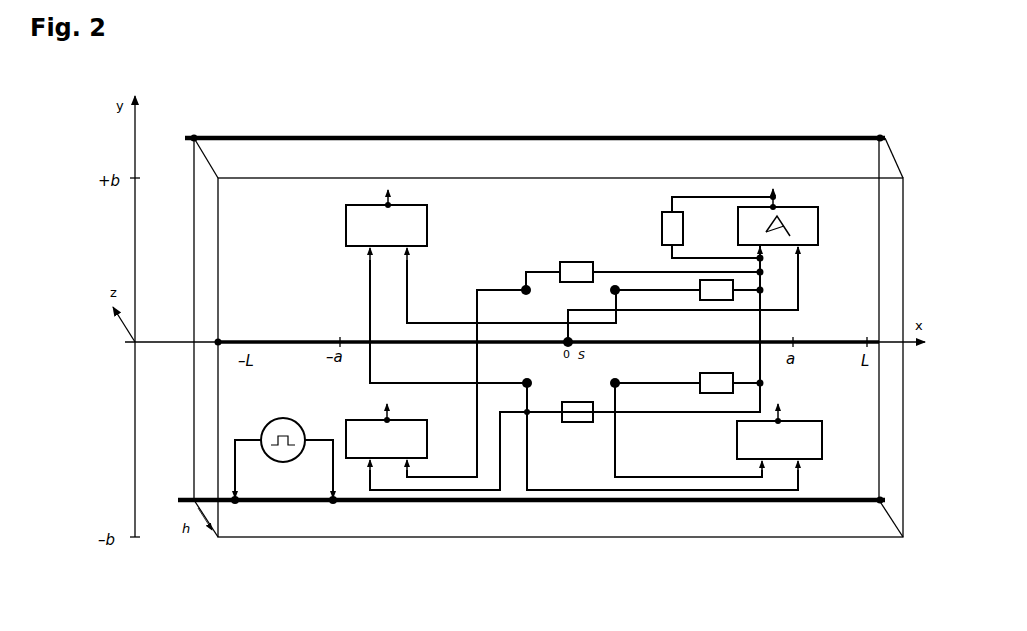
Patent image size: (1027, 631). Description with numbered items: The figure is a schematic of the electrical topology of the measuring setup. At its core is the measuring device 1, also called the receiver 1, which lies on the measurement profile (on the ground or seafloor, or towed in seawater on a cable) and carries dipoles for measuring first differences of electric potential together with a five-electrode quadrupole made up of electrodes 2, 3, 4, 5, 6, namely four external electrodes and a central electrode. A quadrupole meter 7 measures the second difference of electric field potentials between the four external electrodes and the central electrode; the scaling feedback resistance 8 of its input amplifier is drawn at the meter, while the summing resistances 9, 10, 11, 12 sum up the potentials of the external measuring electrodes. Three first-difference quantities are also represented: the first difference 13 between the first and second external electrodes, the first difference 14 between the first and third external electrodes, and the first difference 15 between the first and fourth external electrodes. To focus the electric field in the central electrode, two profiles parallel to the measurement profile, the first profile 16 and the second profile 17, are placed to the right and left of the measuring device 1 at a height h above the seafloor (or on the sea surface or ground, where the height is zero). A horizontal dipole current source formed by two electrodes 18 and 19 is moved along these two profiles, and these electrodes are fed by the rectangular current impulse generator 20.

The measuring device 1 is at (294, 341).
The electrode 2 is at (569, 339).
The electrode 3 is at (529, 414).
The electrode 4 is at (617, 387).
The electrode 5 is at (617, 293).
The electrode 6 is at (527, 288).
The quadrupole meter 7 is at (813, 207).
The scaling feedback resistance 8 is at (685, 197).
The summing resistance 9 is at (593, 423).
The summing resistance 10 is at (706, 394).
The summing resistance 11 is at (703, 281).
The summing resistance 12 is at (573, 262).
The first difference of electric field potentials ΔU_M1M2 13 is at (806, 461).
The first difference of electric field potentials ΔU_M1M3 14 is at (408, 205).
The first difference of electric field potentials ΔU_M1M4 15 is at (383, 459).
The first profile 16 is at (500, 491).
The second profile 17 is at (258, 138).
The electrode 18 is at (334, 502).
The electrode 19 is at (236, 502).
The rectangular current impulse generator 20 is at (285, 462).